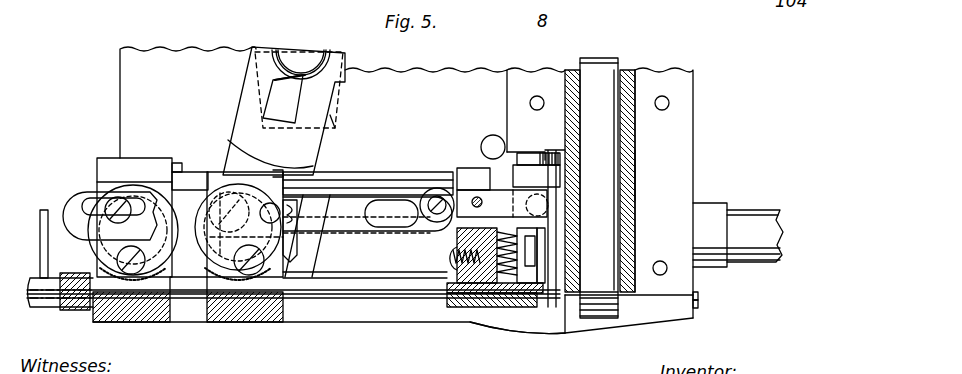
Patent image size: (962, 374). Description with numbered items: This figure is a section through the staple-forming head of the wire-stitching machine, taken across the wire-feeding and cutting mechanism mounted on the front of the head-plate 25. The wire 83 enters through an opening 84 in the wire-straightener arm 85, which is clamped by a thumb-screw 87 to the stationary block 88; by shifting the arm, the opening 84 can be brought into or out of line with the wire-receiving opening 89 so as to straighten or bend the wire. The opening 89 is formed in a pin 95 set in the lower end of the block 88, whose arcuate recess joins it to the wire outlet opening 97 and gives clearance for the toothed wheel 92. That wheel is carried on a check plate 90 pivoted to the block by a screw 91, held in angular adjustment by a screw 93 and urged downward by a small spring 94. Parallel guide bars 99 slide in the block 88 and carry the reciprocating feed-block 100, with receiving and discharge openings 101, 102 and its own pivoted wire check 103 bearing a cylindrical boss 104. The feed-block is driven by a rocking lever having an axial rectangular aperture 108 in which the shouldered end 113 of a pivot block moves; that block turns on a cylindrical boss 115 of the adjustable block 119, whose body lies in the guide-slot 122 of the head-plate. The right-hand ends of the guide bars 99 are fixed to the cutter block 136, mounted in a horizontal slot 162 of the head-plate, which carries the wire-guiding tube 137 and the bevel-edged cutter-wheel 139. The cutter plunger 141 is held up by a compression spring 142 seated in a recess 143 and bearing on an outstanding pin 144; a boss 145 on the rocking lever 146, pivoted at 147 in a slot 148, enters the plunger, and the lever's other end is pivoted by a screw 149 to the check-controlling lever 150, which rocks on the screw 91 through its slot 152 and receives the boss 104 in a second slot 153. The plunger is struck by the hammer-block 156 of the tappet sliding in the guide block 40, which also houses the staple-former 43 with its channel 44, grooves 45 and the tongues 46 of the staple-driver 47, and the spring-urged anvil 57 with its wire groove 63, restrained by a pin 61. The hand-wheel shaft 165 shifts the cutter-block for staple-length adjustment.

The head-plate 25 is at (332, 102).
The cylindrical boss 104 is at (279, 165).
The cylindrical boss 115 is at (293, 60).
The adjustable block 119 is at (342, 68).
The rectangular shouldered end 113 is at (318, 72).
The rectangular aperture 108 is at (300, 111).
The rectangular guide-slot 122 is at (335, 124).
The staple-driver 47 is at (596, 62).
The grooves 45 is at (618, 108).
The tongues 46 is at (620, 118).
The staple-former 43 is at (635, 147).
The vertical channel 44 is at (633, 173).
The hammer-block 156 is at (560, 165).
The pin 61 is at (700, 295).
The guide block 40 is at (673, 310).
The shaft 165 is at (735, 222).
The wire-receiving groove 63 is at (598, 297).
The anvil 57 is at (600, 313).
The cutter-wheel 139 is at (565, 333).
The opening 84 is at (55, 308).
The wire-straightener arm 85 is at (72, 282).
The thumb-screw 87 is at (40, 230).
The stationary block 88 is at (128, 165).
The spring 94 is at (197, 180).
The screw 91 is at (120, 187).
The wire check plate 90 is at (140, 187).
The slot 152 is at (90, 205).
The screw 93 is at (145, 258).
The pin 95 is at (131, 303).
The wire-receiving opening 89 is at (97, 293).
The toothed wheel 92 is at (133, 283).
The wire outlet opening 97 is at (170, 303).
The feed-block 100 is at (277, 292).
The wire-receiving opening 101 is at (220, 320).
The discharge opening 102 is at (283, 322).
The wire check 103 is at (239, 229).
The wire 83 is at (287, 278).
The second slot 153 is at (373, 187).
The check-controlling lever 150 is at (377, 230).
The guide bars 99 is at (307, 280).
The screw 149 is at (437, 186).
The slot 148 is at (440, 224).
The rocking lever 146 is at (472, 183).
The pivot 147 is at (493, 182).
The outstanding pin 144 is at (565, 172).
The compression spring 142 is at (440, 270).
The cutter block 136 is at (483, 297).
The wire-guiding tube 137 is at (493, 267).
The recess 143 is at (480, 307).
The horizontal slot 162 is at (427, 273).
The boss 145 is at (578, 192).
The cutter plunger 141 is at (532, 247).